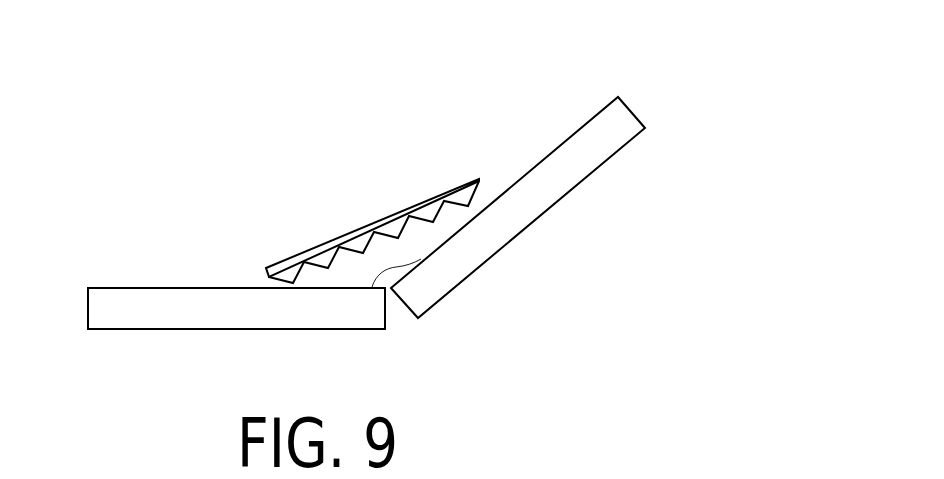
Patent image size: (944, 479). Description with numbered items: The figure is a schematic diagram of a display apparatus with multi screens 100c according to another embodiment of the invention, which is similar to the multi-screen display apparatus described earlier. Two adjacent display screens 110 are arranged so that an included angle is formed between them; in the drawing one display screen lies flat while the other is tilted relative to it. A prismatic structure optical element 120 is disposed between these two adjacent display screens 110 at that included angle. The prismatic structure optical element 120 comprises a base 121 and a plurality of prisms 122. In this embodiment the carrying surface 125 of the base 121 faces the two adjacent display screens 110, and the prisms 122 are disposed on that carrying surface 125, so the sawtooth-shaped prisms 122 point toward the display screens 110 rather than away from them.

The display apparatus with multi screens 100c is at (120, 151).
The display screens 110 is at (193, 318).
The prismatic structure optical element 120 is at (596, 0).
The base 121 is at (432, 196).
The prisms 122 is at (427, 159).
The carrying surface 125 is at (357, 237).